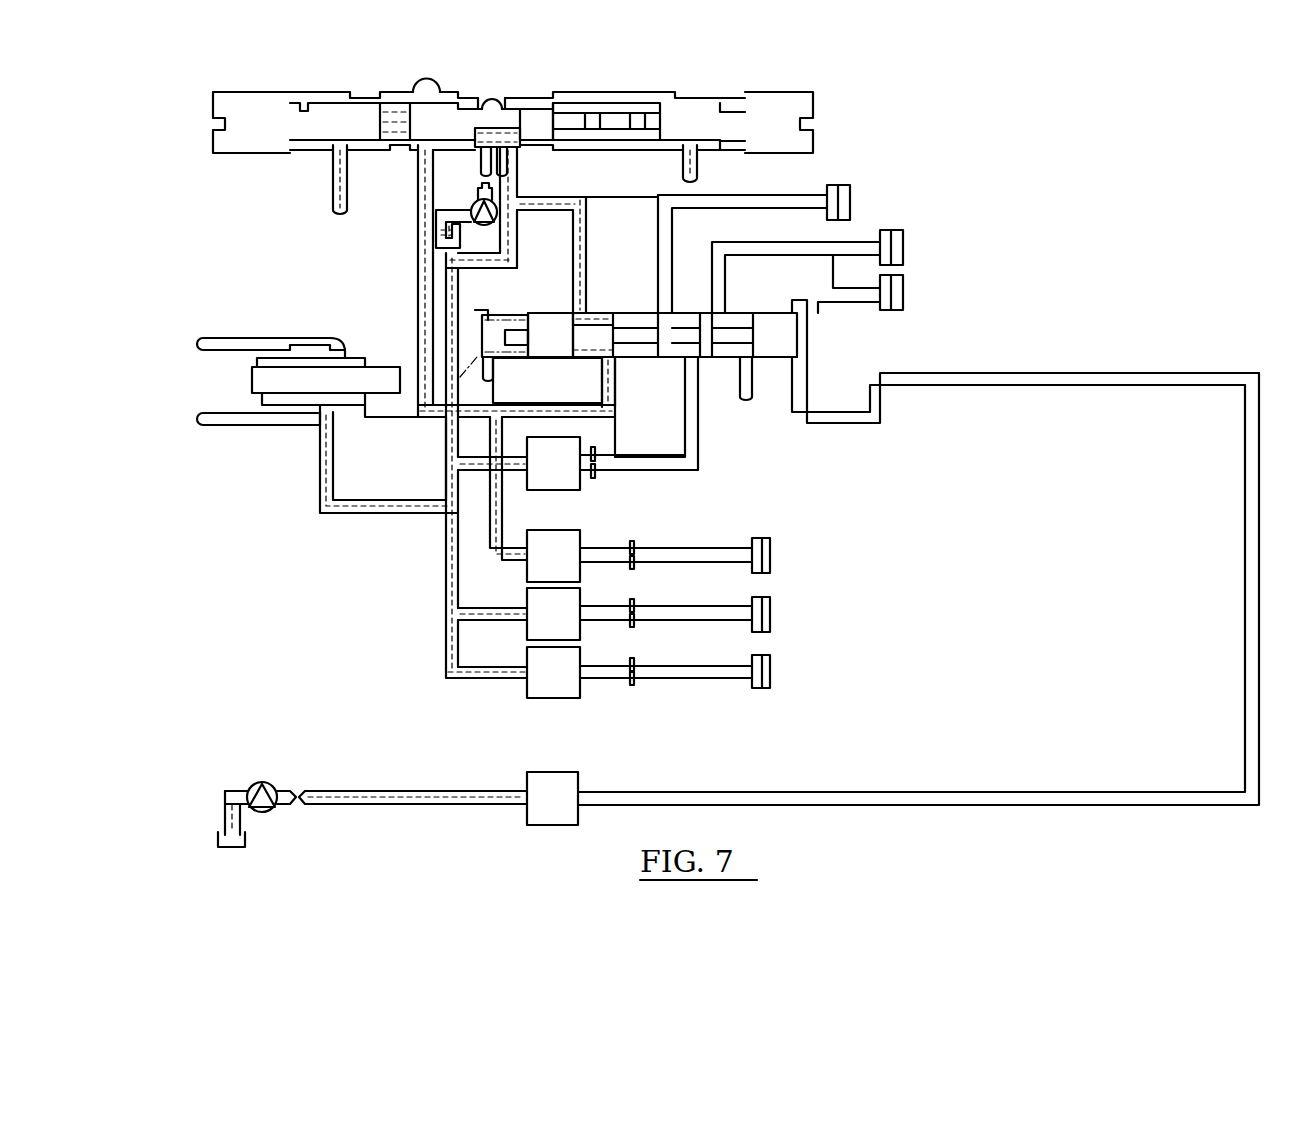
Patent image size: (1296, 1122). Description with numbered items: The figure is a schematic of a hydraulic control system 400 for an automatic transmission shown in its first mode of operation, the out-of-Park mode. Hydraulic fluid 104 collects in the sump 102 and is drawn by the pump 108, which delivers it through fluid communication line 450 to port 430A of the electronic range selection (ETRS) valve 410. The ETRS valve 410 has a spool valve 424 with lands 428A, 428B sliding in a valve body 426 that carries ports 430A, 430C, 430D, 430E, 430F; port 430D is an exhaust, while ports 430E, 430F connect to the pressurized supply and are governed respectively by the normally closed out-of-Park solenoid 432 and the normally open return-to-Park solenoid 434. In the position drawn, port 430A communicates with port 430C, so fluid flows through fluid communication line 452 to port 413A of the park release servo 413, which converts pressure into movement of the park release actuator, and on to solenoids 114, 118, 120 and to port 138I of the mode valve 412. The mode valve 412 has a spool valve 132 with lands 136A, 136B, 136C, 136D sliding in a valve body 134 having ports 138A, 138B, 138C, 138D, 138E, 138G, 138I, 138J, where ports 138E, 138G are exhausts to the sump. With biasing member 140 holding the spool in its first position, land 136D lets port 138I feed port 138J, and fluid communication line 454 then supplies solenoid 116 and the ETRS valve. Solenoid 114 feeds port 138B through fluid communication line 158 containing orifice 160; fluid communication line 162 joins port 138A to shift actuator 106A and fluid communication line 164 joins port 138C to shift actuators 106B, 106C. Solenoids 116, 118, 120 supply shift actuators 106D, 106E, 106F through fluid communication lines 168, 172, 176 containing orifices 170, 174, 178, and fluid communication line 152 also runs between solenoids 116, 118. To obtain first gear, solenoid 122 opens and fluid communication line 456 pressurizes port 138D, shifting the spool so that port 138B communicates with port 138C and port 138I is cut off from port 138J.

The hydraulic control system 400 is at (1027, 162).
The electronic range selection (ETRS) valve 410 is at (300, 66).
The mode valve 412 is at (878, 358).
The park release servo 413 is at (348, 357).
The fluid port 413A is at (330, 442).
The valve 424 is at (395, 115).
The valve body 426 is at (598, 150).
The land 428A is at (463, 123).
The land 428B is at (527, 125).
The port 430A is at (477, 180).
The port 430C is at (507, 160).
The port 430D is at (552, 99).
The port 430E is at (340, 160).
The port 430F is at (683, 173).
The out-of-Park solenoid 432 is at (233, 157).
The return-to-Park solenoid 434 is at (800, 93).
The fluid communication line 450 is at (487, 148).
The fluid communication line 452 is at (518, 212).
The fluid communication line 454 is at (418, 335).
The fluid communication line 456 is at (1095, 372).
The sump 102 is at (438, 236).
The hydraulic fluid 104 is at (442, 243).
The pump 108 is at (468, 218).
The shift actuator 106A is at (850, 204).
The shift actuator 106B is at (903, 252).
The shift actuator 106C is at (903, 302).
The shift actuator 106D is at (770, 557).
The shift actuator 106E is at (770, 616).
The shift actuator 106F is at (770, 674).
The solenoid 114 is at (606, 463).
The solenoid 116 is at (639, 556).
The solenoid 118 is at (639, 614).
The solenoid 120 is at (639, 672).
The solenoid 122 is at (552, 798).
The valve 132 is at (604, 337).
The valve body 134 is at (487, 310).
The land 136A is at (665, 332).
The land 136B is at (707, 327).
The land 136C is at (784, 336).
The land 136D is at (547, 358).
The port 138A is at (661, 330).
The port 138B is at (686, 396).
The port 138C is at (722, 308).
The port 138D is at (795, 365).
The port 138E is at (486, 385).
The port 138G is at (742, 402).
The port 138I is at (582, 300).
The port 138J is at (645, 402).
The biasing member 140 is at (420, 416).
The fluid communication line 152 is at (348, 790).
The fluid communication line 158 is at (648, 474).
The fluid restriction orifice 160 is at (593, 480).
The fluid communication line 162 is at (798, 200).
The fluid communication line 164 is at (822, 246).
The fluid communication line 168 is at (688, 553).
The fluid restriction orifice 170 is at (630, 572).
The fluid communication line 172 is at (690, 612).
The fluid restriction orifice 174 is at (634, 605).
The fluid communication line 176 is at (690, 670).
The fluid restriction orifice 178 is at (634, 664).